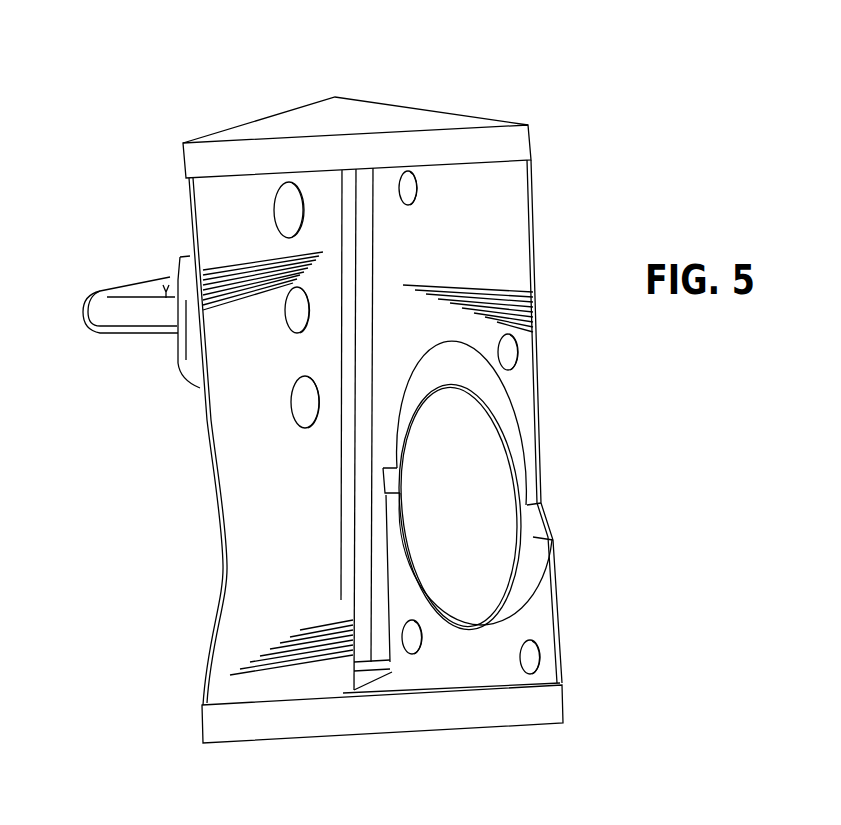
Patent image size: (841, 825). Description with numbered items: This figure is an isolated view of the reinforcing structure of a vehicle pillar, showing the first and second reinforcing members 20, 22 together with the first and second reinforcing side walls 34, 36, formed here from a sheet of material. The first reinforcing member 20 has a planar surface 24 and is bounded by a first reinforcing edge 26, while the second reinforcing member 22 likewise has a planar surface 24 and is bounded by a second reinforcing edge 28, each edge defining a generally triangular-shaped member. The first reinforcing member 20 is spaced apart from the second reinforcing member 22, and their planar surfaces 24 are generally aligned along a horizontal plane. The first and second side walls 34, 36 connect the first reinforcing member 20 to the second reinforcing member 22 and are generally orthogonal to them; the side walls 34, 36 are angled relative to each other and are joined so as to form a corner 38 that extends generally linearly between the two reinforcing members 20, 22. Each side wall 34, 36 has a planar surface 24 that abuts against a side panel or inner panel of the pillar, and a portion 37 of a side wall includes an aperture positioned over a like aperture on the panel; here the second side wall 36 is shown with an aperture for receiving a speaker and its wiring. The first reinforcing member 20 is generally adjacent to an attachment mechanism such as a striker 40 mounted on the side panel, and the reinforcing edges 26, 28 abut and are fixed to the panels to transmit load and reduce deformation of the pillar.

The first reinforcing member 20 is at (323, 112).
The second reinforcing member 22 is at (398, 680).
The planar surface 24 is at (501, 207).
The first reinforcing edge 26 is at (532, 140).
The second reinforcing edge 28 is at (200, 735).
The first reinforcing side wall 34 is at (278, 428).
The second reinforcing side wall 36 is at (469, 422).
The portion 37 is at (532, 457).
The corner 38 is at (357, 545).
The striker 40 is at (103, 312).